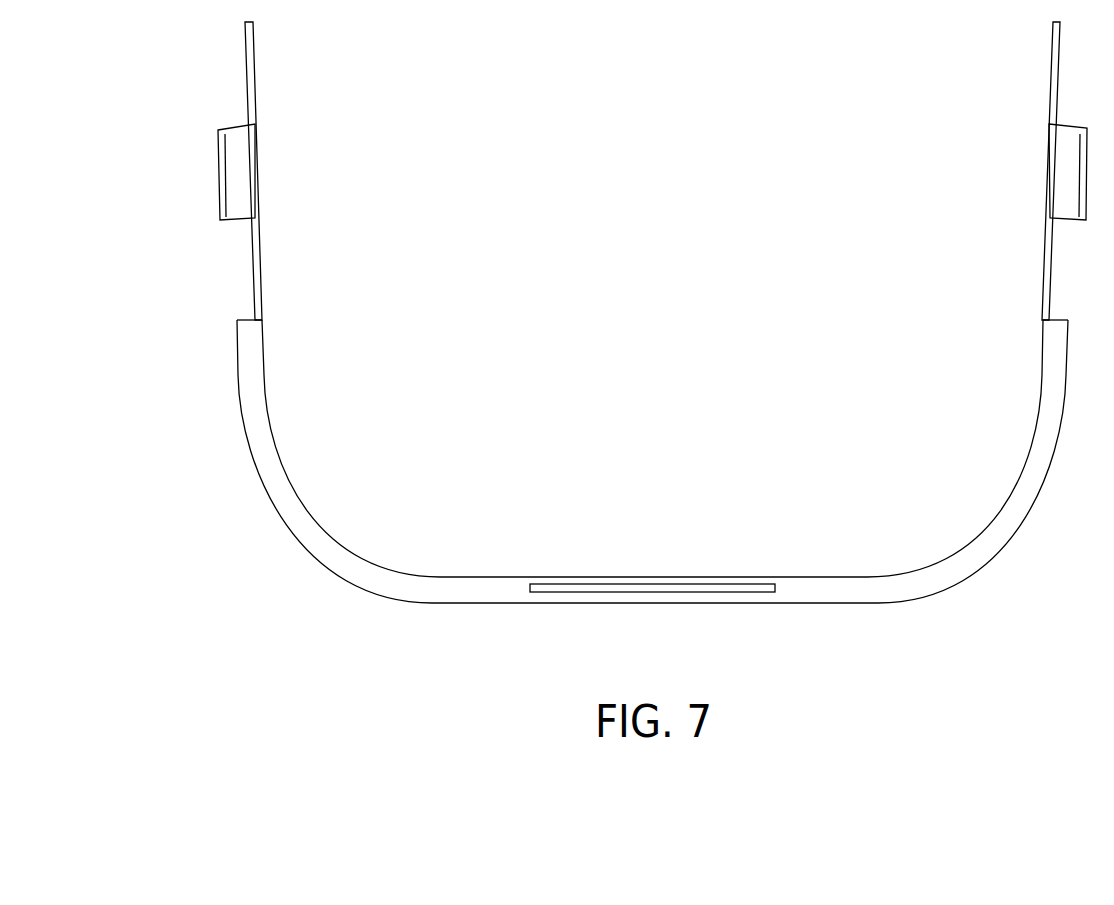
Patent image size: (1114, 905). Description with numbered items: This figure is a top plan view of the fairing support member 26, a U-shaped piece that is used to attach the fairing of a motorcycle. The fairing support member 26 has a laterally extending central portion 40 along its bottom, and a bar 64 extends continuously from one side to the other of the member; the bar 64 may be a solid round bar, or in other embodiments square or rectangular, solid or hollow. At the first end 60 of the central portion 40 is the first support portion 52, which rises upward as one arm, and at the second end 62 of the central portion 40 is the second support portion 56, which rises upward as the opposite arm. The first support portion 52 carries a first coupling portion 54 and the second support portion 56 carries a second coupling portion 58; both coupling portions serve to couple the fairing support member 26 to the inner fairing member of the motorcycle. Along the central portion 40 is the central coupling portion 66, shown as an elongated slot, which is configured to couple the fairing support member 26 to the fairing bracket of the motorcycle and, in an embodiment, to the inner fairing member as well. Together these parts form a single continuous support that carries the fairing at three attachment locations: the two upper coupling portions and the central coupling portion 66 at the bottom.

The fairing support member 26 is at (620, 462).
The central portion 40 is at (655, 545).
The first support portion 52 is at (268, 275).
The first coupling portion 54 is at (240, 172).
The second support portion 56 is at (1008, 260).
The second coupling portion 58 is at (1068, 164).
The first end 60 is at (385, 552).
The second end 62 is at (967, 461).
The bar 64 is at (1040, 447).
The central coupling portion 66 is at (690, 583).